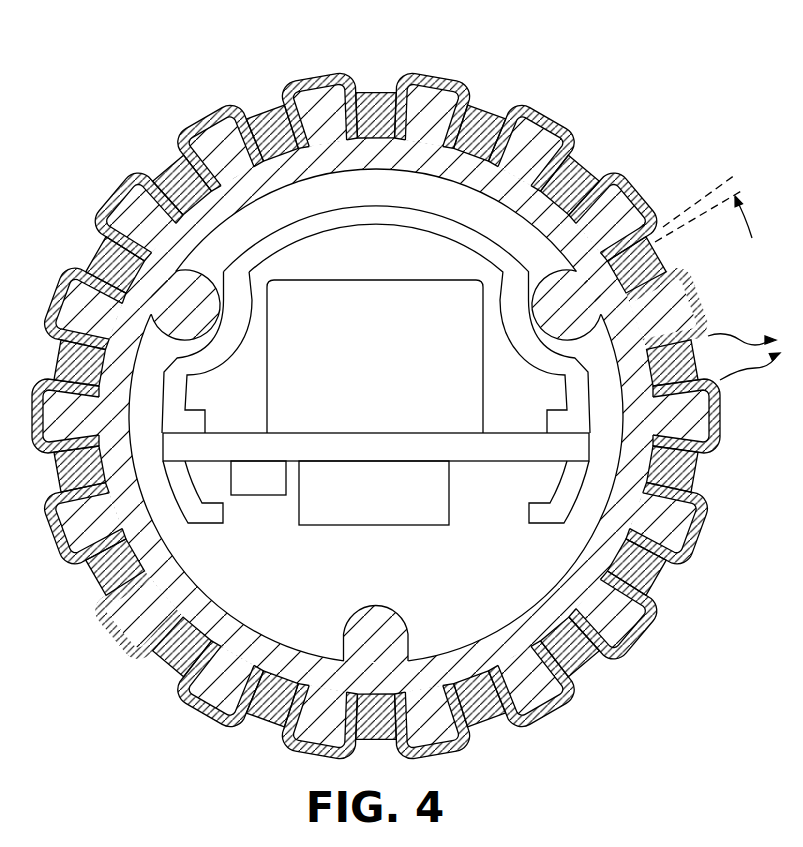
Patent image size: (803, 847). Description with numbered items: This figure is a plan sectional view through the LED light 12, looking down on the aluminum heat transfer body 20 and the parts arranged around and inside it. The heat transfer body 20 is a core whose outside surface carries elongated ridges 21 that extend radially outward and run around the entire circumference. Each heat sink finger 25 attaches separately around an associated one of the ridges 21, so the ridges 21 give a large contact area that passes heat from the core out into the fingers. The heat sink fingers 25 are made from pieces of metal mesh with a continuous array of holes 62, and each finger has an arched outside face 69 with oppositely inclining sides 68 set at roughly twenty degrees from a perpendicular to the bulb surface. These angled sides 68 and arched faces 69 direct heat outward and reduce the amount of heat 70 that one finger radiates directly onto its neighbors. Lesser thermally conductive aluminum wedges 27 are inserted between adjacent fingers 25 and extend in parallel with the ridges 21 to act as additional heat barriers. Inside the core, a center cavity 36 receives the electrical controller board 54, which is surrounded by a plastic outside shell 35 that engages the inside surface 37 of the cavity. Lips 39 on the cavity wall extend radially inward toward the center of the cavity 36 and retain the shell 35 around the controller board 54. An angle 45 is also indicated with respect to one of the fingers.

The LED light 12 is at (600, 66).
The heat transfer body 20 is at (115, 474).
The ridges 21 is at (82, 305).
The heat sink fingers 25 is at (305, 70).
The wedges 27 is at (96, 575).
The shell 35 is at (418, 238).
The center cavity 36 is at (291, 593).
The inside surface 37 is at (493, 633).
The lips 39 is at (217, 323).
The angle 45 is at (720, 181).
The controller board 54 is at (492, 463).
The holes 62 is at (113, 190).
The inclining sides 68 is at (707, 468).
The arched outside face 69 is at (441, 73).
The heat 70 is at (737, 336).